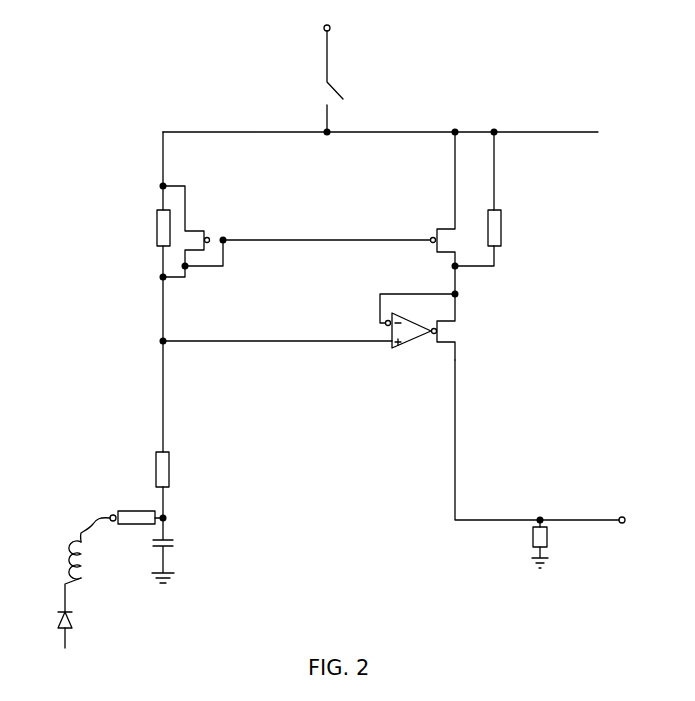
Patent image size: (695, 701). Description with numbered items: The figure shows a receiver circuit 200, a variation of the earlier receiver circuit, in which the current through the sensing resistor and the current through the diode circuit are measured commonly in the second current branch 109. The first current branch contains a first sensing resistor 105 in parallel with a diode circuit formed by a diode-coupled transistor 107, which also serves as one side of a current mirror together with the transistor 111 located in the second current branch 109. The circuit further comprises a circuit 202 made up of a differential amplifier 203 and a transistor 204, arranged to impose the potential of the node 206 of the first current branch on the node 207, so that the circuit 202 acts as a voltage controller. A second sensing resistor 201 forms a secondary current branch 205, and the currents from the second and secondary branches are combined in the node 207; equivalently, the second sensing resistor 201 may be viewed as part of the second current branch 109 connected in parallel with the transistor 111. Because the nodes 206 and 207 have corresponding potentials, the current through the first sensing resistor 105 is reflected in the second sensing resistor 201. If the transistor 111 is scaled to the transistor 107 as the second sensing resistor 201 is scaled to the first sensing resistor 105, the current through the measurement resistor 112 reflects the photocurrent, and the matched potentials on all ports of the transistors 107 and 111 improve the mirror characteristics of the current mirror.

The receiver circuit 200 is at (122, 130).
The first sensing resistor 105 is at (157, 236).
The transistor 107 is at (207, 238).
The transistor 111 is at (432, 238).
The secondary current branch 205 is at (505, 195).
The second sensing resistor 201 is at (501, 238).
The node 207 is at (455, 266).
The node 206 is at (163, 341).
The differential amplifier 203 is at (392, 350).
The circuit 202 is at (378, 367).
The transistor 204 is at (440, 331).
The second current branch 109 is at (470, 415).
The measurement resistor 112 is at (547, 537).